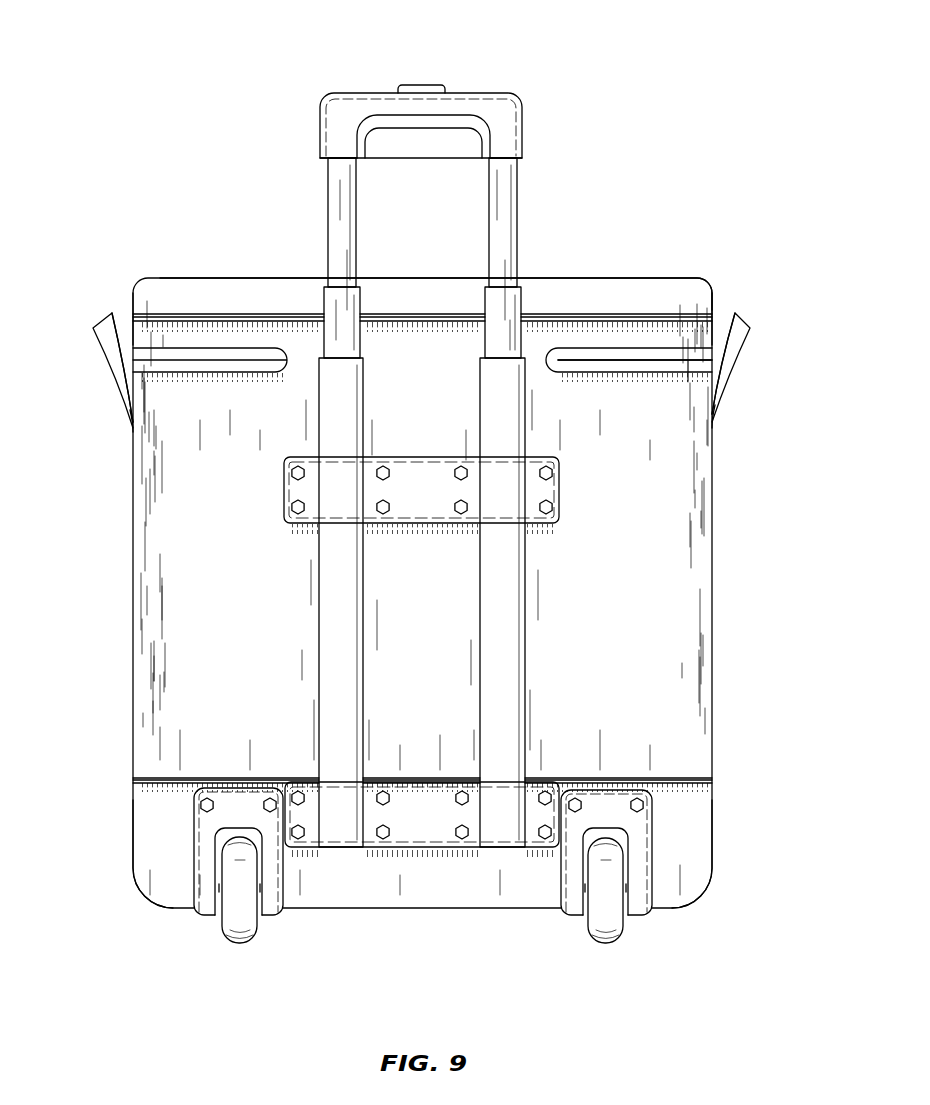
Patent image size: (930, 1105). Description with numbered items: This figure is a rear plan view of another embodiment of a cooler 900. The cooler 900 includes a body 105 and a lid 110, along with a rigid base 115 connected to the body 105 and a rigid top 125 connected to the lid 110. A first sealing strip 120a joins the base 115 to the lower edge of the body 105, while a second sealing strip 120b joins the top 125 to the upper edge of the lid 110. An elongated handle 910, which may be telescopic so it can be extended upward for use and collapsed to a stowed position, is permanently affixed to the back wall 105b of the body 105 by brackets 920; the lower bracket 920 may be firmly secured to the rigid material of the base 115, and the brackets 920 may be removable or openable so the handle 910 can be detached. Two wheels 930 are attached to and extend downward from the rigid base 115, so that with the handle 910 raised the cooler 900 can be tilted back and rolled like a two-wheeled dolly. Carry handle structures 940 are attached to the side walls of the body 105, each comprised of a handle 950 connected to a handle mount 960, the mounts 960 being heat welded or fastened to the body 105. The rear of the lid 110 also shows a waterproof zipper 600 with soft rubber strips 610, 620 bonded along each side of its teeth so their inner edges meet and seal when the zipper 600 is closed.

The cooler 900 is at (170, 34).
The elongated handle 910 is at (510, 123).
The brackets 920 is at (548, 522).
The wheels 930 is at (248, 918).
The handle structures 940 is at (116, 387).
The handle 950 is at (108, 338).
The handle mount 960 is at (130, 423).
The zipper 600 is at (556, 362).
The soft rubber strip 610 is at (613, 376).
The soft rubber strip 620 is at (620, 348).
The body 105 is at (713, 630).
The back wall 105b is at (450, 653).
The lid 110 is at (712, 330).
The rigid base 115 is at (688, 896).
The first sealing strip 120a is at (133, 779).
The second sealing strip 120b is at (133, 318).
The rigid top 125 is at (703, 285).